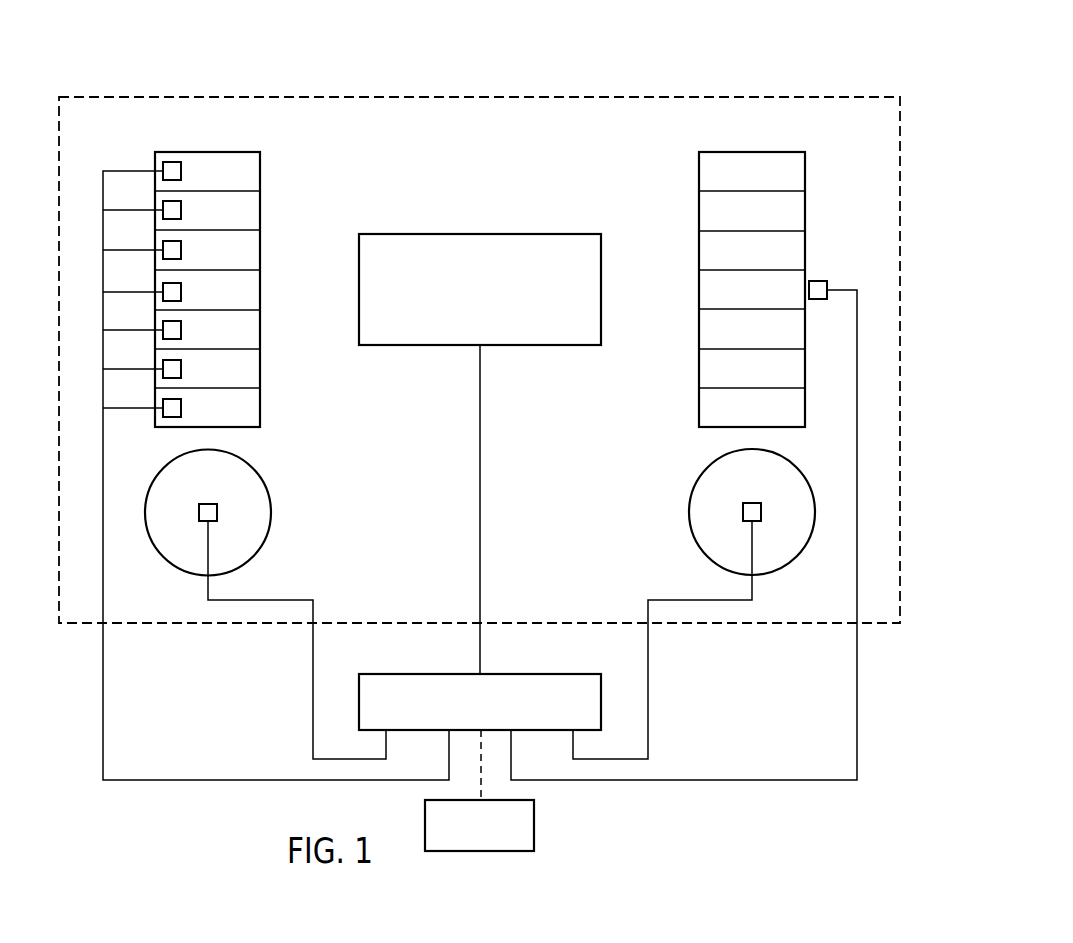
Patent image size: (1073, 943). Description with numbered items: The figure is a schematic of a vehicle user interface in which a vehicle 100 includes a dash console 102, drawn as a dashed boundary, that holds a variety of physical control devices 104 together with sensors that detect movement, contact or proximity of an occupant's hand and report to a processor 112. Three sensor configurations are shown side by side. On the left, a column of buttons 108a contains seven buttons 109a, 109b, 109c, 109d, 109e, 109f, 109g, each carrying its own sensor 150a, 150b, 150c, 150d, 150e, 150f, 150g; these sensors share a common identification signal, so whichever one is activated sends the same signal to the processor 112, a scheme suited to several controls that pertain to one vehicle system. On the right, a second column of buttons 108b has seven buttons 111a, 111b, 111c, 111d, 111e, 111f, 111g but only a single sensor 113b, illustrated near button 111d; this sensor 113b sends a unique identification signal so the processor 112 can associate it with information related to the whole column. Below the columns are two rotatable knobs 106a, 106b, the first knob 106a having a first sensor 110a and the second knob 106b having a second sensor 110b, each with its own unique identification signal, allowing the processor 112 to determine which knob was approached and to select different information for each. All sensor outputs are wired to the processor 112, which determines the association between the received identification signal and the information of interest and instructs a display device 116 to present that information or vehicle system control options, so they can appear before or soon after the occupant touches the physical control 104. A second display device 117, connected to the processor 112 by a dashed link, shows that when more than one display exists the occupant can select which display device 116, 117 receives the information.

The vehicle 100 is at (975, 122).
The dash console 102 is at (512, 97).
The physical control devices 104 is at (862, 189).
The first rotatable knob 106a is at (270, 528).
The second rotatable knob 106b is at (690, 506).
The column of buttons 108a is at (246, 267).
The column of buttons 108b is at (721, 267).
The button 109a is at (260, 176).
The button 109b is at (260, 215).
The button 109c is at (260, 255).
The button 109d is at (260, 295).
The button 109e is at (260, 334).
The button 109f is at (260, 373).
The button 109g is at (260, 412).
The first sensor 110a is at (207, 504).
The second sensor 110b is at (754, 503).
The button 111a is at (699, 174).
The button 111b is at (699, 214).
The button 111c is at (699, 253).
The button 111d is at (699, 293).
The button 111e is at (699, 332).
The button 111f is at (699, 371).
The button 111g is at (699, 410).
The processor 112 is at (551, 674).
The sensor 113b is at (819, 281).
The display device 116 is at (477, 234).
The second display device 117 is at (534, 819).
The sensor 150a is at (181, 173).
The sensor 150b is at (181, 212).
The sensor 150c is at (181, 252).
The sensor 150d is at (181, 294).
The sensor 150e is at (181, 332).
The sensor 150f is at (181, 371).
The sensor 150g is at (181, 410).